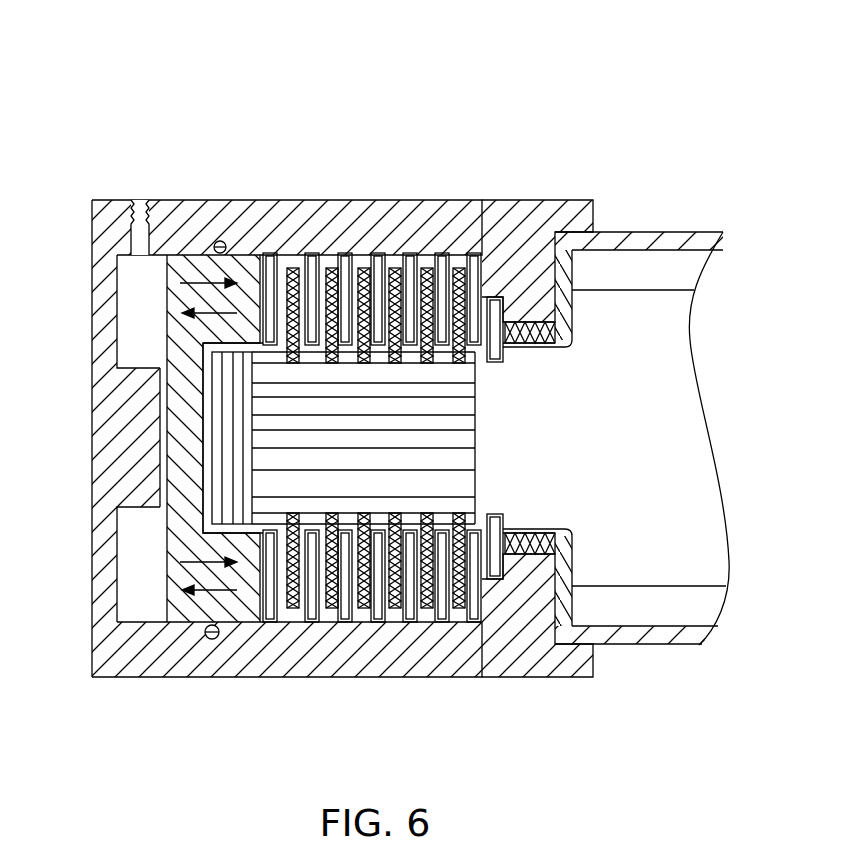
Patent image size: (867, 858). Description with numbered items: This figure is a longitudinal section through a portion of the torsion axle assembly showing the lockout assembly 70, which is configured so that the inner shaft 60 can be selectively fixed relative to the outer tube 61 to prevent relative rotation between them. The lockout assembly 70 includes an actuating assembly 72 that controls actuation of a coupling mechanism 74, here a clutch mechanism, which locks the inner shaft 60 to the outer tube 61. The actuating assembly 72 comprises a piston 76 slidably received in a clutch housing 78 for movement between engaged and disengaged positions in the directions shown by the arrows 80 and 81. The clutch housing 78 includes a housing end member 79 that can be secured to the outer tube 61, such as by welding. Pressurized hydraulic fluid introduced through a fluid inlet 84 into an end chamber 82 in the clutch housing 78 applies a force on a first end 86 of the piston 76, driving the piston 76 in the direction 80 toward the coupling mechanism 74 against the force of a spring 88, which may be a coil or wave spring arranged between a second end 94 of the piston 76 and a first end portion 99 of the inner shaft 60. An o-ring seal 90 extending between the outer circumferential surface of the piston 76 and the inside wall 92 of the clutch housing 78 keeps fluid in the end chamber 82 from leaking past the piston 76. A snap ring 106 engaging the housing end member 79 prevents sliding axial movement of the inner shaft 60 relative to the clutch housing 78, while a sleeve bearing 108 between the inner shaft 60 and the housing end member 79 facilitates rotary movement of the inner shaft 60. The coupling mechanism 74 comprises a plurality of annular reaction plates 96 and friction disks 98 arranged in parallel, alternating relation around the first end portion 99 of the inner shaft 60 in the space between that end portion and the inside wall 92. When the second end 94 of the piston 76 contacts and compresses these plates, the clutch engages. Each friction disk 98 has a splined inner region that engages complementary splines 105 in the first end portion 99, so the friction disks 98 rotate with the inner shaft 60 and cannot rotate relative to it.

The lockout assembly 70 is at (357, 74).
The inner shaft 60 is at (690, 428).
The outer tube 61 is at (648, 646).
The actuating assembly 72 is at (115, 660).
The coupling mechanism 74 is at (429, 660).
The piston 76 is at (185, 487).
The clutch housing 78 is at (393, 200).
The housing end member 79 is at (563, 667).
The direction 80 is at (215, 283).
The direction 81 is at (237, 312).
The end chamber 82 is at (152, 318).
The fluid inlet 84 is at (140, 200).
The first end 86 is at (150, 585).
The spring 88 is at (212, 450).
The o-ring seal 90 is at (208, 640).
The inside wall 92 is at (404, 266).
The second end 94 is at (257, 295).
The reaction plates 96 is at (313, 263).
The friction disks 98 is at (365, 268).
The first end portion 99 is at (343, 482).
The splines 105 is at (290, 473).
The snap ring 106 is at (498, 300).
The sleeve bearing 108 is at (548, 548).